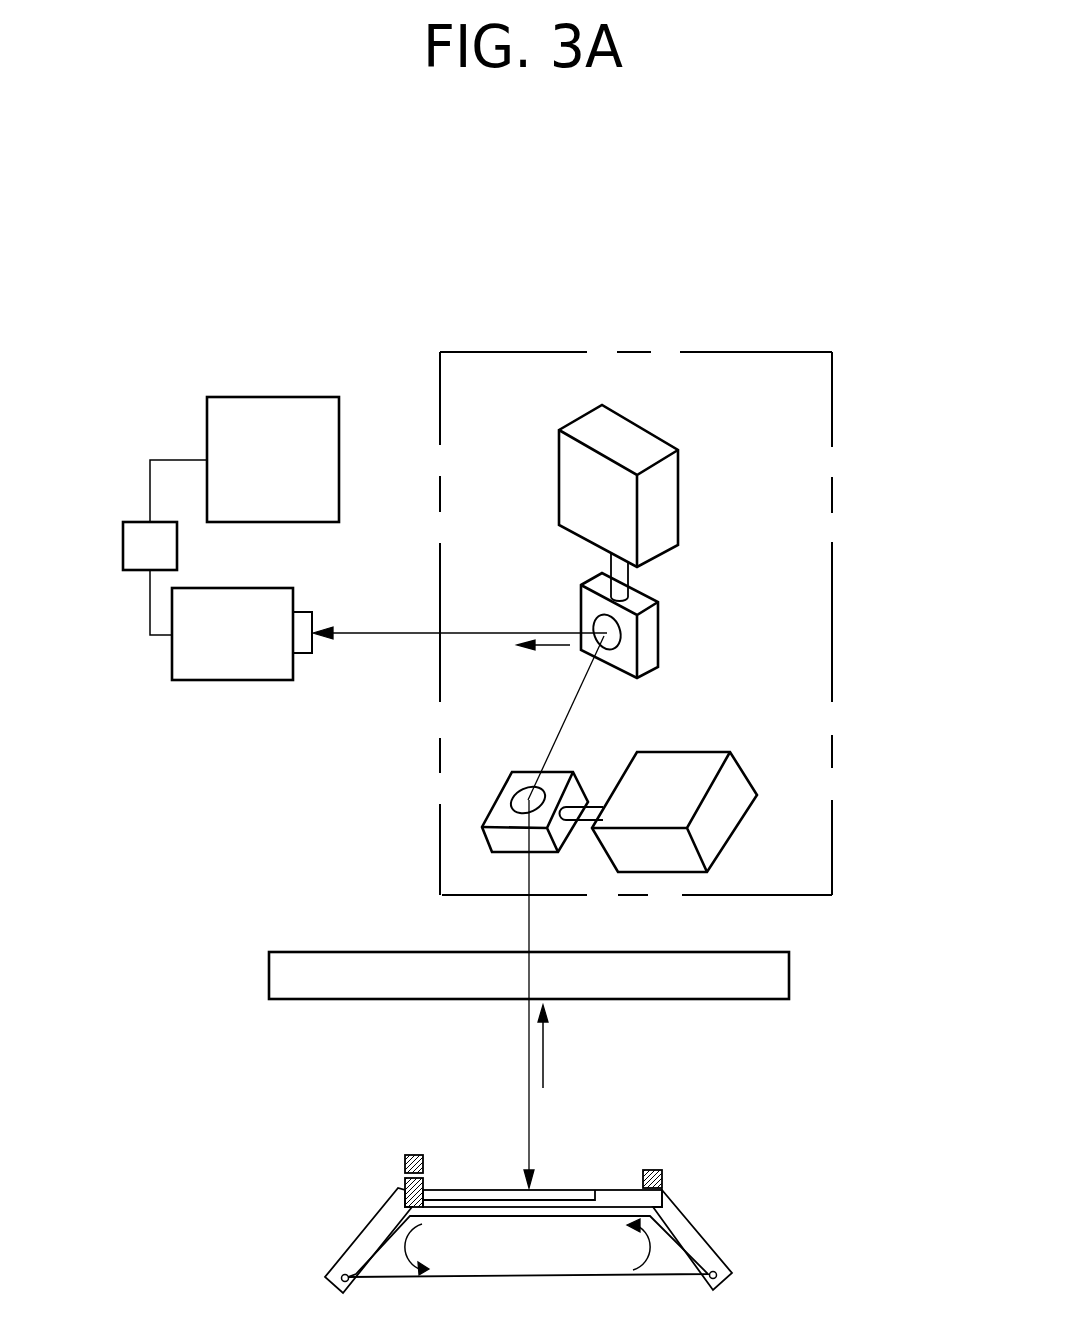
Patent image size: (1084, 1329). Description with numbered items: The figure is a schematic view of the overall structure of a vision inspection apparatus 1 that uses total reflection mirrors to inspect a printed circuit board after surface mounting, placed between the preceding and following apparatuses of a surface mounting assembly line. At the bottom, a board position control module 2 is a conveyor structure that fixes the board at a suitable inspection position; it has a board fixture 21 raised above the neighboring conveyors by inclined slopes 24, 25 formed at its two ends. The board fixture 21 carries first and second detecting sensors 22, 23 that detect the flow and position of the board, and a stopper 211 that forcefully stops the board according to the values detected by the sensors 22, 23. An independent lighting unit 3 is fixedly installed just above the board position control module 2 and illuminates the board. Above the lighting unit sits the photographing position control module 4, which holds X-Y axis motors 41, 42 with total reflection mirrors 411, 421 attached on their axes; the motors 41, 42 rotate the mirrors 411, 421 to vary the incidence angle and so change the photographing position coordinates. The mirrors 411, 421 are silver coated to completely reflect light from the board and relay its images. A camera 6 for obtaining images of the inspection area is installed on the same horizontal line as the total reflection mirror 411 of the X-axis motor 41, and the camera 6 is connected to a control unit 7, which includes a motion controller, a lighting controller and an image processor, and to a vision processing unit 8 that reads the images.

The vision inspection apparatus 1 is at (218, 293).
The board position control module 2 is at (699, 1133).
The independent lighting unit 3 is at (790, 970).
The photographing position control module 4 is at (832, 402).
The X-axis motor 41 is at (673, 483).
The total reflection mirror 411 is at (658, 630).
The Y-axis motor 42 is at (683, 757).
The total reflection mirror 421 is at (563, 772).
The camera 6 is at (215, 670).
The control unit 7 is at (122, 546).
The vision processing unit 8 is at (275, 402).
The board fixture 21 is at (603, 1190).
The stopper 211 is at (405, 1180).
The first detecting sensor 22 is at (662, 1178).
The second detecting sensor 23 is at (407, 1154).
The inclined slope 24 is at (702, 1227).
The inclined slope 25 is at (362, 1232).